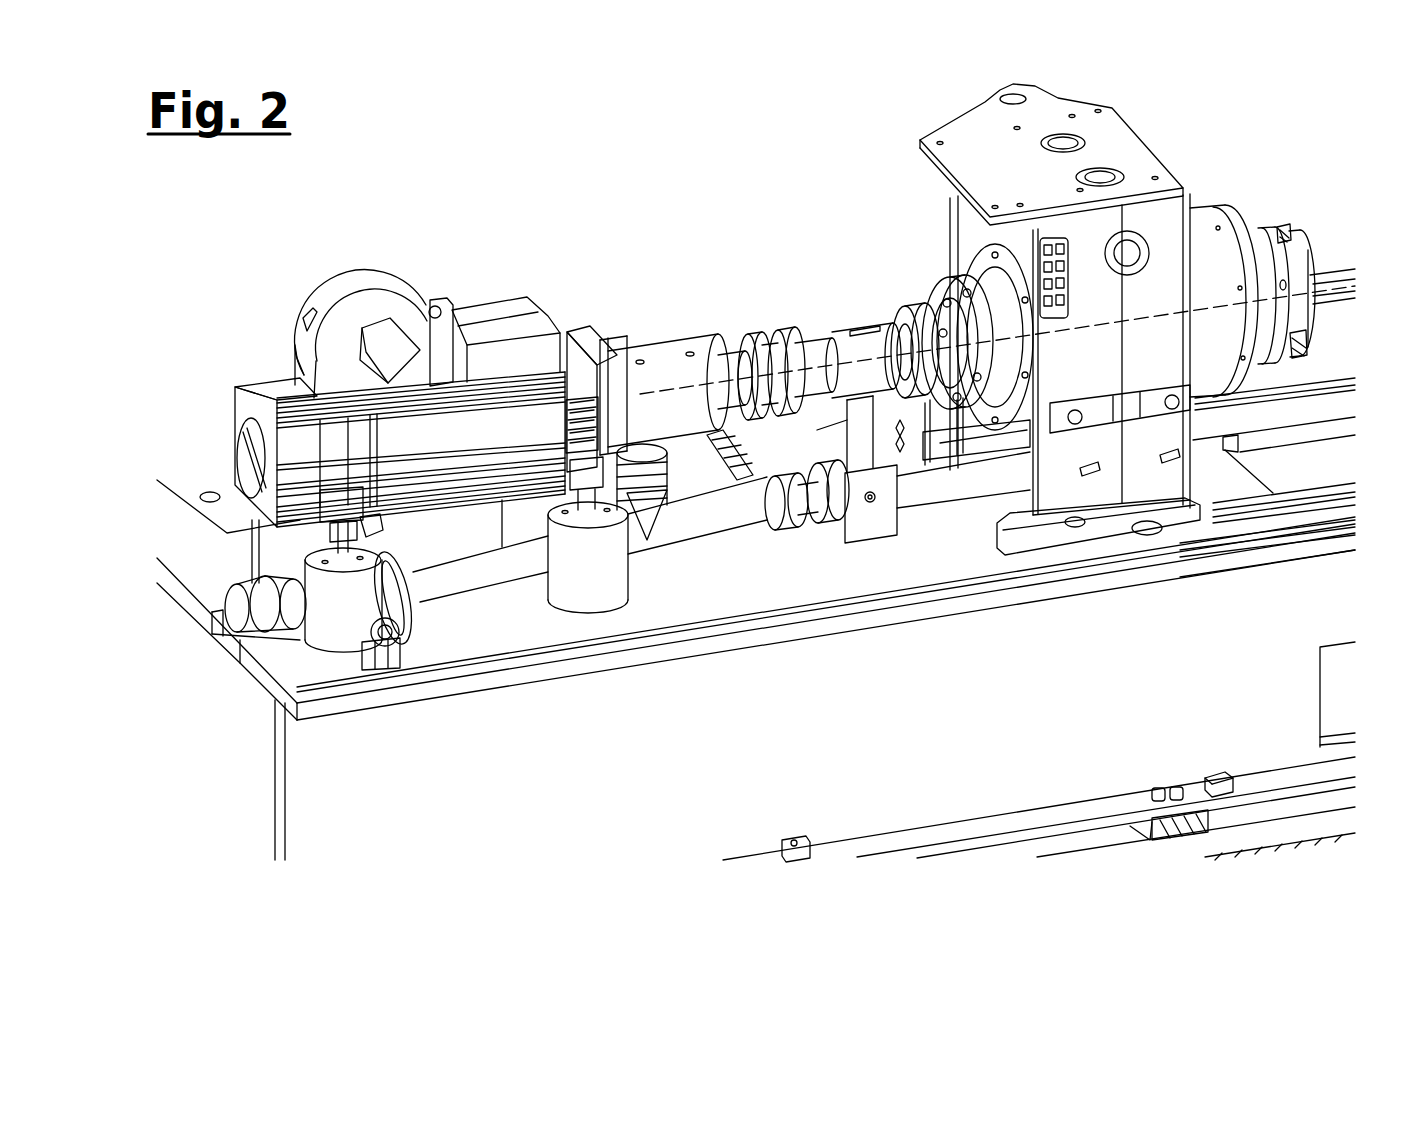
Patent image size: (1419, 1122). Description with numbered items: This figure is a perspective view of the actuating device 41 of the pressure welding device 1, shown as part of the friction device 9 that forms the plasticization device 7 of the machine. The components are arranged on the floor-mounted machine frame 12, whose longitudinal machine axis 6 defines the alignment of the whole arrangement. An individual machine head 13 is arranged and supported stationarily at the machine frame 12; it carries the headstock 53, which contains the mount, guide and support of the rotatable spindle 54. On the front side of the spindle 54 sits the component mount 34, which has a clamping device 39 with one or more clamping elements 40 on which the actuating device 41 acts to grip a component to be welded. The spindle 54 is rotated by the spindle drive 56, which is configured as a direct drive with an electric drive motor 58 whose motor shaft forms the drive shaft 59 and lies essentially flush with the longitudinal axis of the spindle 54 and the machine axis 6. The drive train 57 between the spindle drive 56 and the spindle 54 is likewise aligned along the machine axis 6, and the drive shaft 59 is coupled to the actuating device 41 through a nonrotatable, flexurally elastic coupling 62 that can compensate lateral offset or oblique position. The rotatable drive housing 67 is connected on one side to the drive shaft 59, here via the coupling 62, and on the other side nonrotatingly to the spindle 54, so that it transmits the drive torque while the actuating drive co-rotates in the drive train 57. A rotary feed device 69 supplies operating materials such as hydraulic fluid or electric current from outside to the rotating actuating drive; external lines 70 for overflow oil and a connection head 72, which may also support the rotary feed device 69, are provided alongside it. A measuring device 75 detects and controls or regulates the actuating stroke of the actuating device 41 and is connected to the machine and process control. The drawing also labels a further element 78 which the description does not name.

The pressure welding device 1 is at (680, 172).
The machine axis 6 is at (1355, 295).
The plasticization device 7 is at (756, 620).
The friction device 9 is at (1105, 605).
The machine frame 12 is at (358, 756).
The machine head 13 is at (1006, 319).
The headstock 53 is at (1015, 180).
The component mount 34 is at (1208, 185).
The clamping device 39 is at (1258, 235).
The clamping element 40 is at (1302, 240).
The actuating device 41 is at (815, 330).
The spindle 54 is at (1033, 350).
The spindle drive 56 is at (492, 300).
The drive train 57 is at (722, 333).
The electric drive motor 58 is at (275, 397).
The drive shaft 59 is at (680, 370).
The coupling 62 is at (765, 333).
The drive housing 67 is at (942, 310).
The rotary feed device 69 is at (838, 328).
The external lines 70 is at (818, 472).
The connection head 72 is at (880, 522).
The measuring device 75 is at (892, 310).
The bracket 78 is at (625, 343).